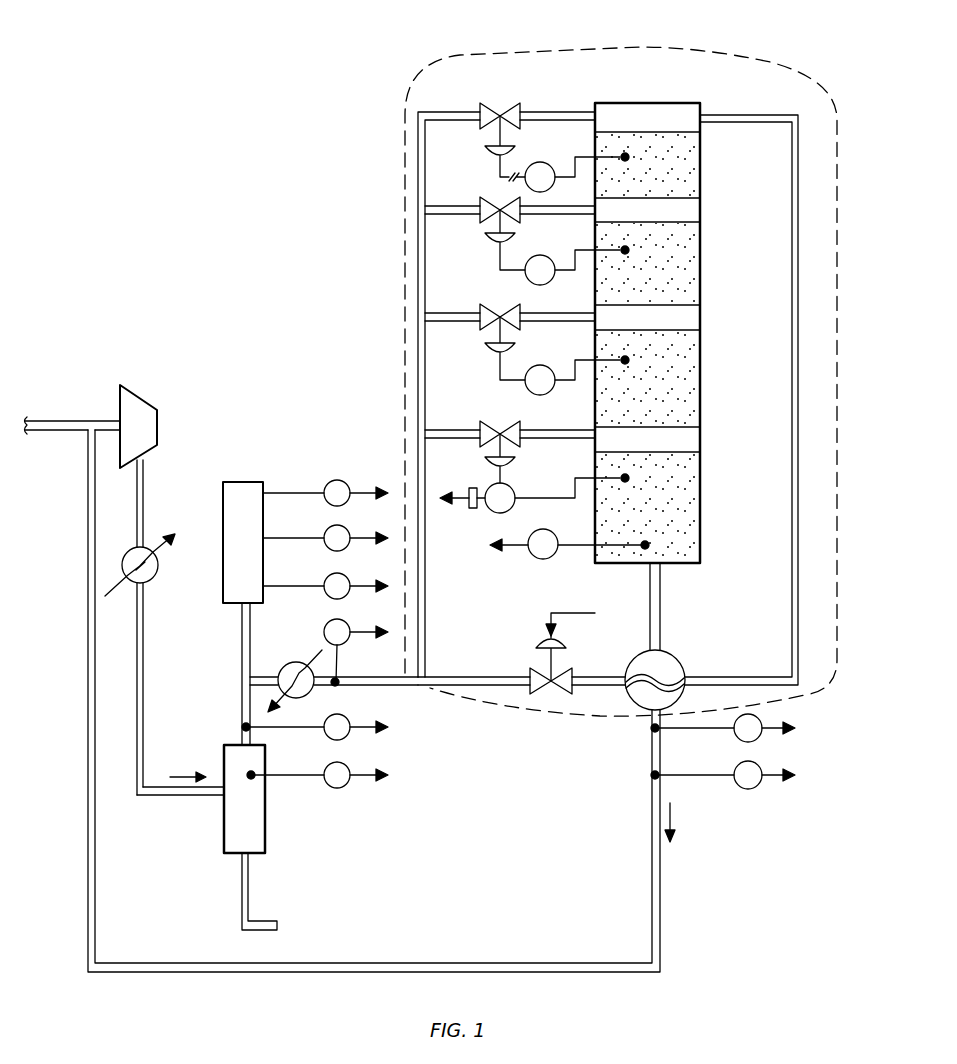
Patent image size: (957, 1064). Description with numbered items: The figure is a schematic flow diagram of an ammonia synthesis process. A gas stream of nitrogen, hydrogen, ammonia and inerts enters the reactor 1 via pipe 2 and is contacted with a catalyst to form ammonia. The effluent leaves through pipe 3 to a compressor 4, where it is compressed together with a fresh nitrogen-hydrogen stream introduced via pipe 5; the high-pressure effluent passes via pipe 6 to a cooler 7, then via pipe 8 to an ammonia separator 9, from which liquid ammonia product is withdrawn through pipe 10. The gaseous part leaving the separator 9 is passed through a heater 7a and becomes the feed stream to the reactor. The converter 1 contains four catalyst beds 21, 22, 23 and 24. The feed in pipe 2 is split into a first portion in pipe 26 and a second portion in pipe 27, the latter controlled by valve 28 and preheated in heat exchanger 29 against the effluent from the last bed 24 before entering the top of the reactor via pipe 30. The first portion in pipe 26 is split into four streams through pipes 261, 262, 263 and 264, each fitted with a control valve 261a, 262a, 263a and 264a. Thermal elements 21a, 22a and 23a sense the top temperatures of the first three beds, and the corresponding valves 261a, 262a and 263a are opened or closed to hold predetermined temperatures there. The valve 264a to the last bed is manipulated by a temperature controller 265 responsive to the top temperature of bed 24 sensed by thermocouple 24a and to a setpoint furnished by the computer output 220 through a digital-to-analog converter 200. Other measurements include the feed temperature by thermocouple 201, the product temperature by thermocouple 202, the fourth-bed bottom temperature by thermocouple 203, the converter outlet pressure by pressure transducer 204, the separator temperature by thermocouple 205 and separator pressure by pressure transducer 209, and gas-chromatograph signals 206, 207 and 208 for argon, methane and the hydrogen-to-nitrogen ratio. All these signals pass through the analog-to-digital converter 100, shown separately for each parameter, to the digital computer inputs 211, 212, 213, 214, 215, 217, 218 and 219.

The reactor 1 is at (658, 36).
The pipe 2 is at (358, 688).
The pipe 3 is at (652, 905).
The compressor 4 is at (132, 392).
The pipe 5 is at (70, 420).
The pipe 6 is at (145, 475).
The cooler 7 is at (150, 578).
The heater 7a is at (298, 662).
The pipe 8 is at (176, 796).
The ammonia separator 9 is at (266, 830).
The pipe 10 is at (242, 895).
The first catalyst bed 21 is at (702, 158).
The thermal element 21a is at (622, 155).
The second catalyst bed 22 is at (702, 262).
The thermal element 22a is at (622, 248).
The third catalyst bed 23 is at (702, 372).
The thermal element 23a is at (622, 358).
The fourth catalyst bed 24 is at (702, 510).
The thermocouple 24a is at (622, 476).
The pipe 26 is at (426, 607).
The pipe 27 is at (488, 676).
The valve 28 is at (548, 696).
The heat exchanger 29 is at (642, 706).
The pipe 30 is at (800, 369).
The analog-to-digital converter 100 is at (541, 560).
The digital-to-analog converter 200 is at (473, 487).
The thermocouple 201 is at (340, 678).
The thermocouple 202 is at (653, 732).
The thermocouple 203 is at (644, 550).
The pressure transducer 204 is at (653, 779).
The thermocouple 205 is at (256, 778).
The signal 206 is at (266, 583).
The signal 207 is at (266, 535).
The signal 208 is at (266, 490).
The pressure transducer 209 is at (243, 727).
The computer input 211 is at (381, 625).
The computer input 212 is at (790, 732).
The computer input 213 is at (490, 553).
The computer input 214 is at (381, 578).
The computer input 215 is at (386, 750).
The computer input 217 is at (381, 530).
The computer input 218 is at (381, 485).
The output signal 219 is at (385, 703).
The computer output 220 is at (445, 502).
The pipe 261 is at (470, 111).
The control valve 261a is at (508, 107).
The pipe 262 is at (440, 205).
The control valve 262a is at (494, 244).
The pipe 263 is at (440, 312).
The control valve 263a is at (510, 309).
The pipe 264 is at (440, 430).
The control valve 264a is at (510, 424).
The temperature controller 265 is at (516, 506).